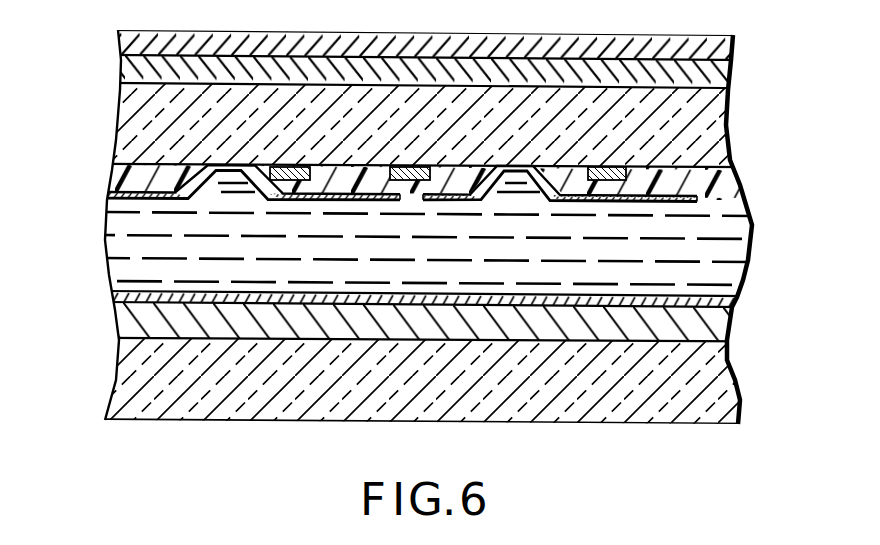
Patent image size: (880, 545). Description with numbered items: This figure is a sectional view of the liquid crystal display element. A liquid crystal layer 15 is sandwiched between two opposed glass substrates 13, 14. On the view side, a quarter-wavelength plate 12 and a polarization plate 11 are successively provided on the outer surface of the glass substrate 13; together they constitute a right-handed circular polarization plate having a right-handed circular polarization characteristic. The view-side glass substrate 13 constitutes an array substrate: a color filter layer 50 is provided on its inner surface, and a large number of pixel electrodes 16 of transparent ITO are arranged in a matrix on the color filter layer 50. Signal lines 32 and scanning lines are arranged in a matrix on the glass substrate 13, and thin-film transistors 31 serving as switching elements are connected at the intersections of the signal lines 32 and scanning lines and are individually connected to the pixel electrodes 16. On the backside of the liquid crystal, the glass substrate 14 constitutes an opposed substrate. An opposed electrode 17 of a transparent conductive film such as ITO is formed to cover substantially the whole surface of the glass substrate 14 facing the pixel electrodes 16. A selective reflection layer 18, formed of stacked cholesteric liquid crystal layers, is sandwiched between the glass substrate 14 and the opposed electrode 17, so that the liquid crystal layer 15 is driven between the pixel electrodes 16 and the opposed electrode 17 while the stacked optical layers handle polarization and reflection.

The polarization plate 11 is at (736, 42).
The λ/4-wavelength plate 12 is at (730, 76).
The glass substrate 13 is at (728, 128).
The glass substrate 14 is at (725, 382).
The liquid crystal layer 15 is at (725, 252).
The pixel electrodes 16 is at (110, 197).
The opposed electrode 17 is at (736, 297).
The selective reflection layer 18 is at (728, 325).
The thin-film transistors 31 is at (291, 167).
The signal lines 32 is at (412, 167).
The color filter layer 50 is at (738, 183).